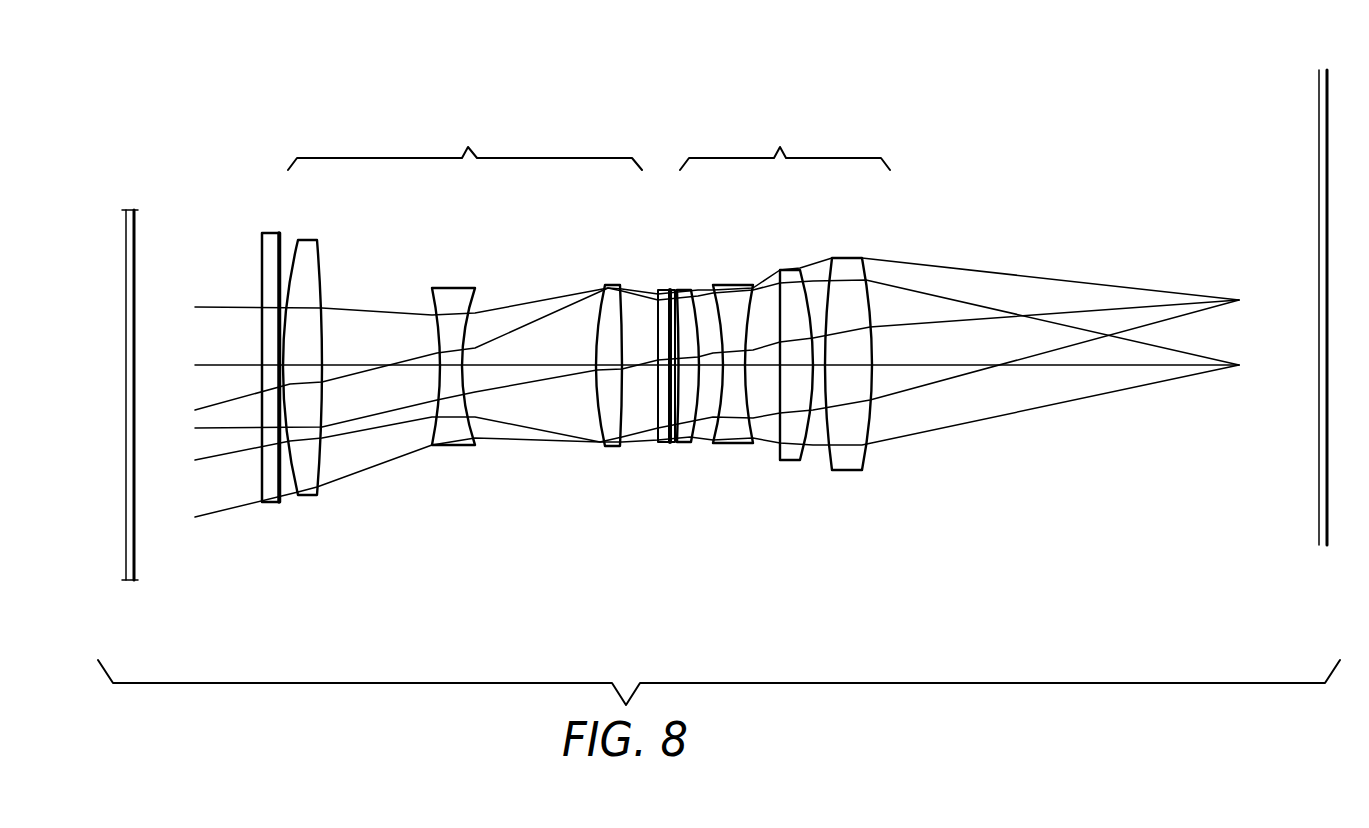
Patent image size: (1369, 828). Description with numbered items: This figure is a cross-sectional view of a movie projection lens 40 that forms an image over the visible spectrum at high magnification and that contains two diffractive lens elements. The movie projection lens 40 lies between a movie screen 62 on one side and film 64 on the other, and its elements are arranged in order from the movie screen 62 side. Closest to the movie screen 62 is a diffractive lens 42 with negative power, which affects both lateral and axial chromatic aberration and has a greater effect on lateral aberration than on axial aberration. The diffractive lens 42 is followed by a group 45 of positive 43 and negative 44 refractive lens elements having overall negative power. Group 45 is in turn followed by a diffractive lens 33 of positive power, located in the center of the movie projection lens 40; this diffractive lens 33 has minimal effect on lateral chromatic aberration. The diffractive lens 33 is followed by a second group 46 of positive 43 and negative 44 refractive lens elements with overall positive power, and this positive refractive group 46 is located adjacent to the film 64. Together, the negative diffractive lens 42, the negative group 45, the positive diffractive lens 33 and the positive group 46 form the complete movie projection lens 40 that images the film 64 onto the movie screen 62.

The movie projection lens 40 is at (988, 172).
The diffractive lens 42 is at (275, 502).
The positive refractive lens element 43 is at (300, 240).
The negative refractive lens element 44 is at (455, 288).
The group of refractive lens elements 45 is at (465, 135).
The group of refractive lens elements 46 is at (785, 135).
The diffractive lens 33 is at (667, 443).
The movie screen 62 is at (137, 568).
The film 64 is at (1316, 514).